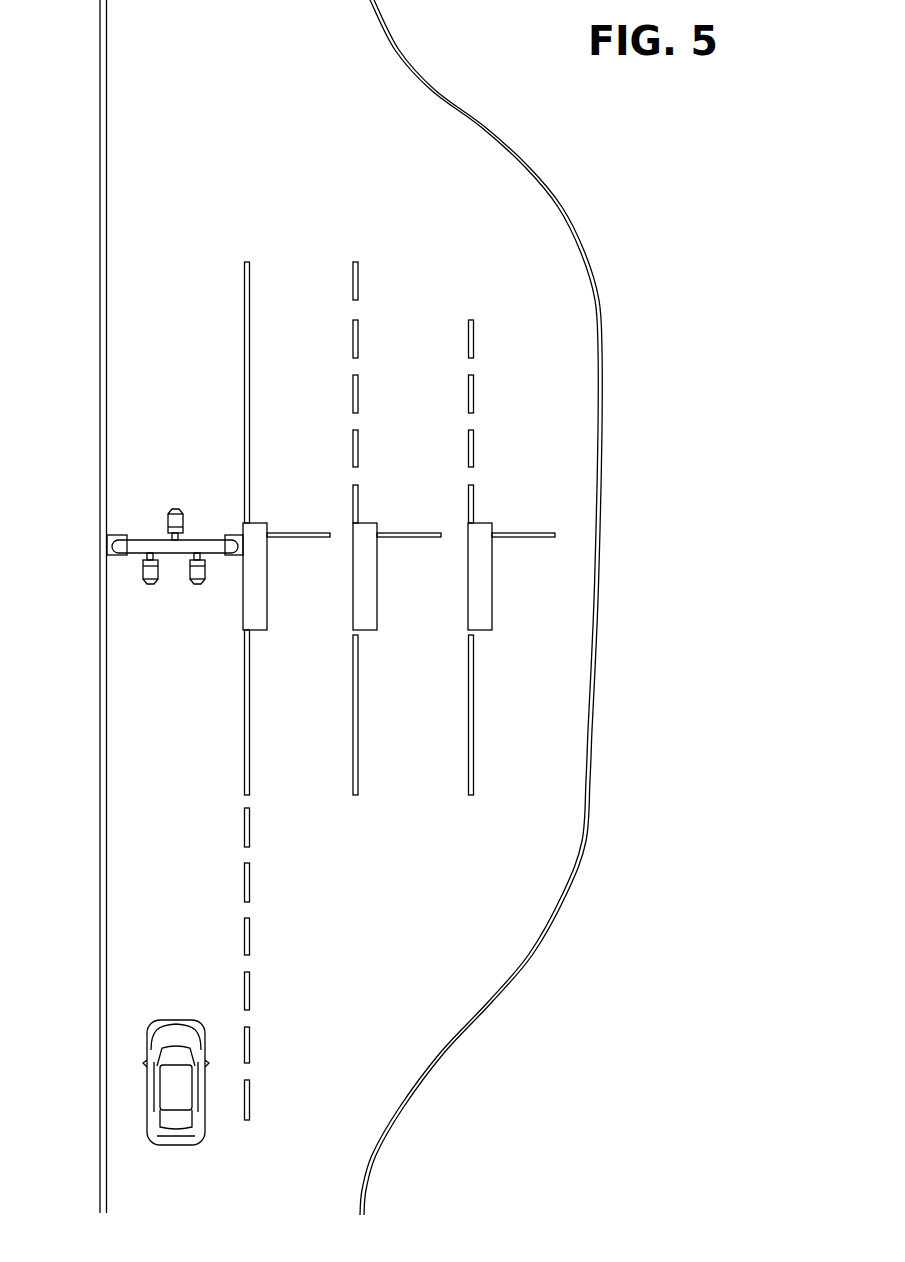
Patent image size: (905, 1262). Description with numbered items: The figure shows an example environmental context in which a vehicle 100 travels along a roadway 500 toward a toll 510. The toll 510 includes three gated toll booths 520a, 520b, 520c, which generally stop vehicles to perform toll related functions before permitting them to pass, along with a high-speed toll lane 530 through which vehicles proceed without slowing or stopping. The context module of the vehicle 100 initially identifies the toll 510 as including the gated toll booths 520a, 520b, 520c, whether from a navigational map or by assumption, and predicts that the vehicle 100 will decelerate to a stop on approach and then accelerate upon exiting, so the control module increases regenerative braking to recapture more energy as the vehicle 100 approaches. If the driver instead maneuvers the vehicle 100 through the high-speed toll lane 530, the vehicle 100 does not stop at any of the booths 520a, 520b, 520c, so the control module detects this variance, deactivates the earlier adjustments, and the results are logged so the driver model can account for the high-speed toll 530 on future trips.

The vehicle 100 is at (204, 1095).
The roadway 500 is at (529, 1005).
The toll 510 is at (603, 521).
The gated toll booth 520a is at (255, 522).
The gated toll booth 520b is at (365, 522).
The gated toll booth 520c is at (480, 522).
The high-speed toll lane 530 is at (119, 540).